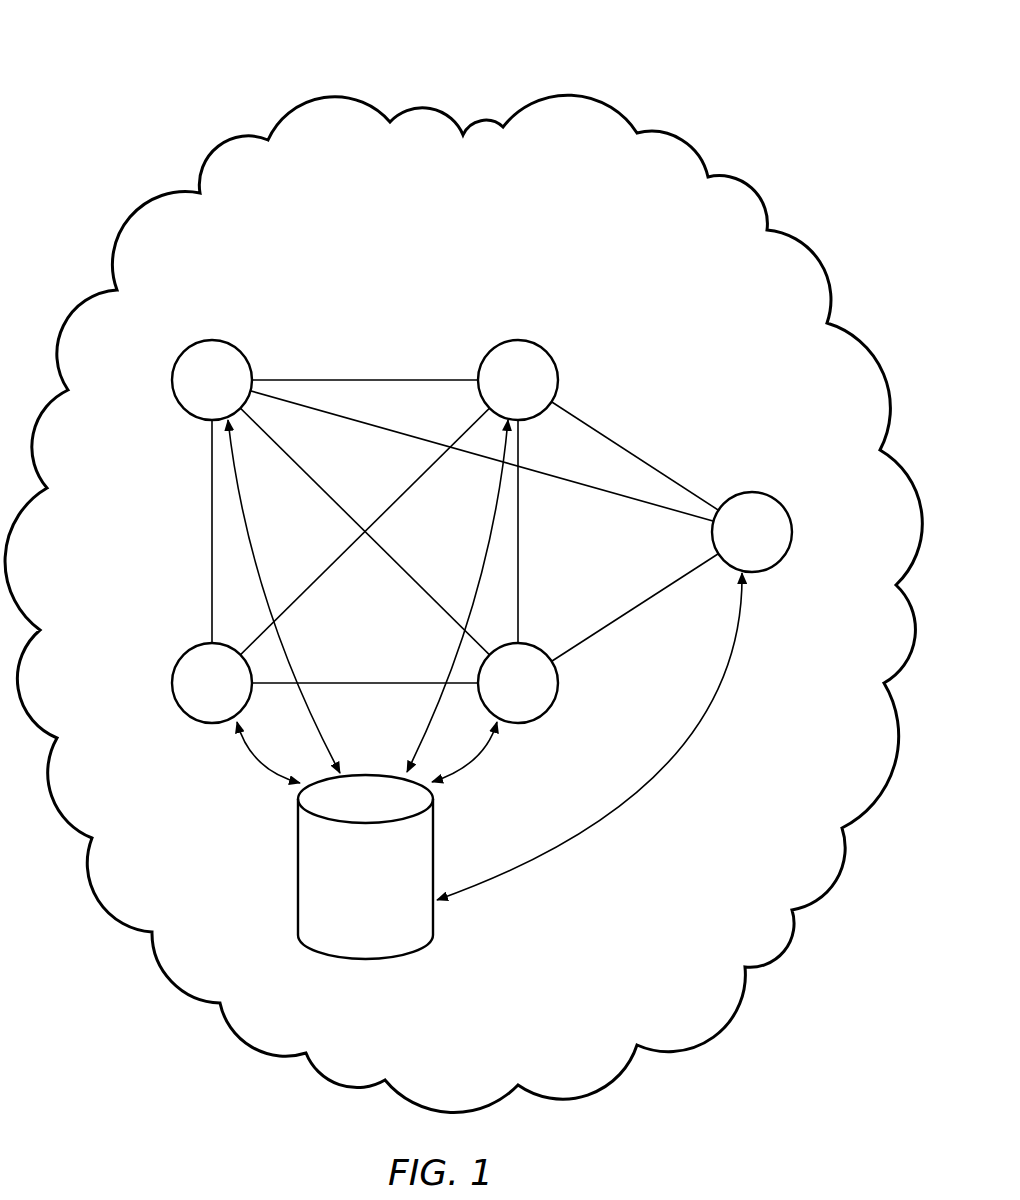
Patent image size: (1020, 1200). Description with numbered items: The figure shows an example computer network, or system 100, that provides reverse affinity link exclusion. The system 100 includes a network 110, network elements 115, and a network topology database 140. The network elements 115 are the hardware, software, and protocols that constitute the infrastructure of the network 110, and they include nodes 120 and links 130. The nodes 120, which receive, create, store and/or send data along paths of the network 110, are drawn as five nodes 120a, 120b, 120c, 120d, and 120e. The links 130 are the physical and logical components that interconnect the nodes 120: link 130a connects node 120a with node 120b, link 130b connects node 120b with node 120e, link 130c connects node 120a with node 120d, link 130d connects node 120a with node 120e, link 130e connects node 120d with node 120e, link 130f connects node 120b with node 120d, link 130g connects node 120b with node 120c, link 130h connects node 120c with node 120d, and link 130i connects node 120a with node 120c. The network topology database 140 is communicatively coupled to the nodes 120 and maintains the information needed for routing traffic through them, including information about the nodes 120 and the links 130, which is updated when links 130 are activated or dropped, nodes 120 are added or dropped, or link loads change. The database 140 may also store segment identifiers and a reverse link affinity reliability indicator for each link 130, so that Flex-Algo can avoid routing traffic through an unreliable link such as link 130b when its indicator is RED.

The computer network 100 is at (205, 97).
The network 110 is at (736, 192).
The network elements 115 is at (578, 420).
The nodes 120 is at (238, 348).
The node 120a is at (175, 368).
The node 120b is at (485, 348).
The node 120c is at (173, 700).
The node 120d is at (560, 685).
The node 120e is at (794, 512).
The links 130 is at (297, 378).
The link 130a is at (437, 382).
The link 130b is at (667, 475).
The link 130c is at (305, 472).
The link 130d is at (587, 487).
The link 130e is at (635, 608).
The link 130f is at (518, 600).
The link 130g is at (340, 556).
The link 130h is at (340, 683).
The link 130i is at (212, 505).
The network topology database 140 is at (347, 939).